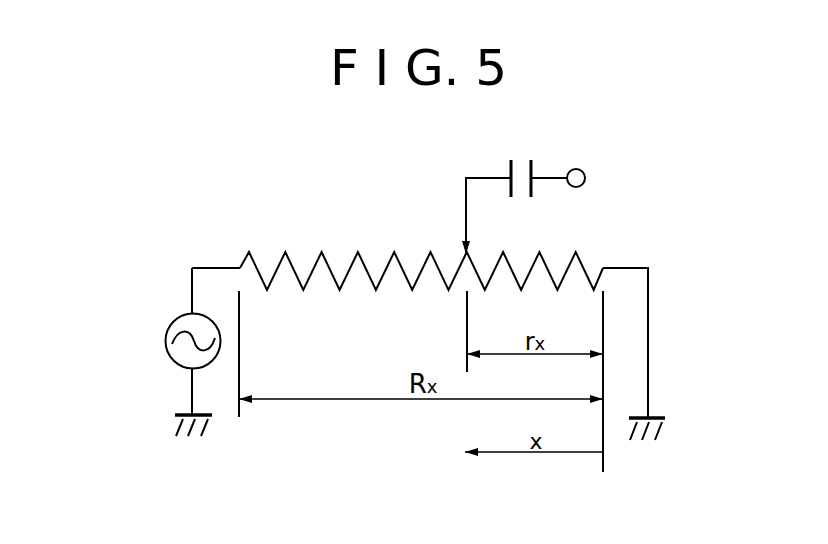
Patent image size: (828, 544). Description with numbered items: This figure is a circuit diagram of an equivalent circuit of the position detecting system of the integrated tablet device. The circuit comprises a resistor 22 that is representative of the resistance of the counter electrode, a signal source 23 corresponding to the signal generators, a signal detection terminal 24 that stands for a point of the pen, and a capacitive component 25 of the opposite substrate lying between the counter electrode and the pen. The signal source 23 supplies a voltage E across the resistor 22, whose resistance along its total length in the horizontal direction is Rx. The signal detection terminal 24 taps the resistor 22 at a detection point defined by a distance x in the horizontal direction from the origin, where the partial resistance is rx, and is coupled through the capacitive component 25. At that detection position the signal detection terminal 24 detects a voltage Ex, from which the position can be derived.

The resistor 22 is at (352, 254).
The signal source 23 is at (164, 341).
The signal detection terminal 24 is at (466, 192).
The capacitive component 25 is at (533, 165).